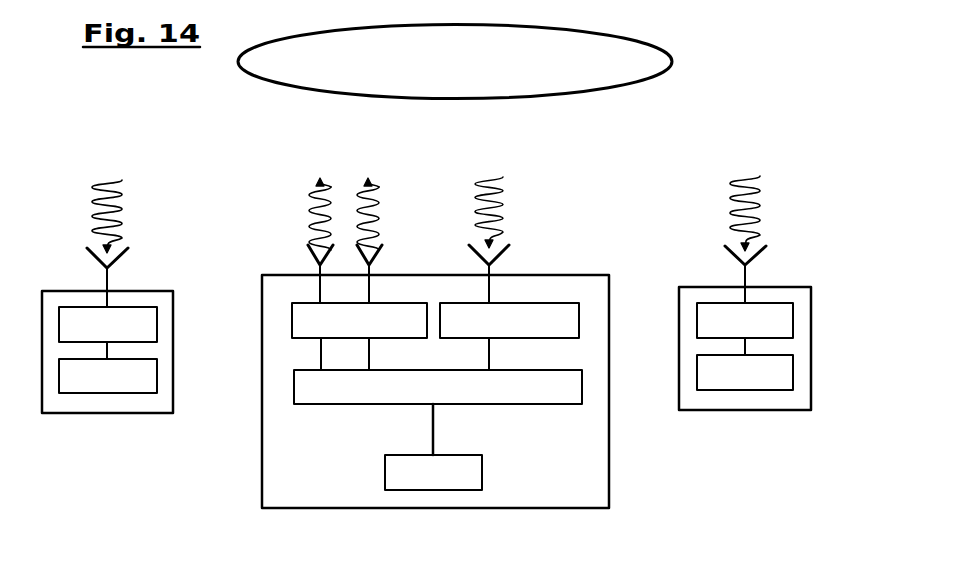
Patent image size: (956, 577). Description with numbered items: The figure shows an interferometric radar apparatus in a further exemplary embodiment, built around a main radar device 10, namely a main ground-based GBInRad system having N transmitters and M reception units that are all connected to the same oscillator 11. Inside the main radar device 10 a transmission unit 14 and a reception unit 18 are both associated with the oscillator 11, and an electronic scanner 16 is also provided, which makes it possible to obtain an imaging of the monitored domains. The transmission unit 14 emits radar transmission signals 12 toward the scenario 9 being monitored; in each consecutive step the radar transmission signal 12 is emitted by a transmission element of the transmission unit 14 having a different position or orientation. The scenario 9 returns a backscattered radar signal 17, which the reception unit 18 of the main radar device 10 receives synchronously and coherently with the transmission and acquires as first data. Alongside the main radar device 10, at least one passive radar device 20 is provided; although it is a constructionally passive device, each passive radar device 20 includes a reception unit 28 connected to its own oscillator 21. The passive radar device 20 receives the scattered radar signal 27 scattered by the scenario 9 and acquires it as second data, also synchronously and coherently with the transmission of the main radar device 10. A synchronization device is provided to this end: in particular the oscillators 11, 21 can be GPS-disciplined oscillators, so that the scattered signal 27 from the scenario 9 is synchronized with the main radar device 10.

The scenario 9 is at (267, 80).
The main radar device 10 is at (572, 272).
The oscillator 11 is at (487, 475).
The radar transmission signal 12 is at (357, 208).
The transmission unit 14 is at (302, 345).
The electronic scanner 16 is at (581, 385).
The backscattered radar signal 17 is at (475, 218).
The reception unit 18 is at (580, 320).
The passive radar device 20 is at (160, 289).
The oscillator 21 is at (157, 372).
The scattered radar signal 27 is at (93, 220).
The reception unit 28 is at (157, 327).